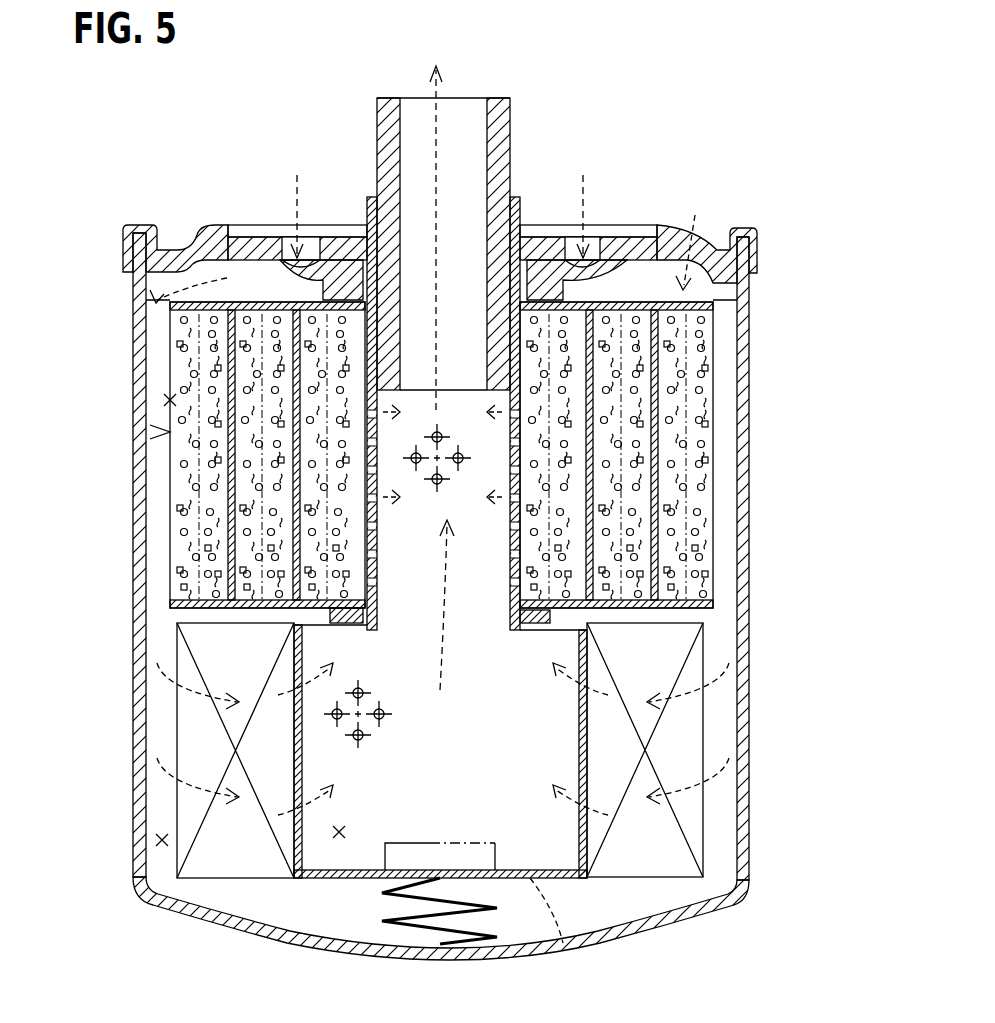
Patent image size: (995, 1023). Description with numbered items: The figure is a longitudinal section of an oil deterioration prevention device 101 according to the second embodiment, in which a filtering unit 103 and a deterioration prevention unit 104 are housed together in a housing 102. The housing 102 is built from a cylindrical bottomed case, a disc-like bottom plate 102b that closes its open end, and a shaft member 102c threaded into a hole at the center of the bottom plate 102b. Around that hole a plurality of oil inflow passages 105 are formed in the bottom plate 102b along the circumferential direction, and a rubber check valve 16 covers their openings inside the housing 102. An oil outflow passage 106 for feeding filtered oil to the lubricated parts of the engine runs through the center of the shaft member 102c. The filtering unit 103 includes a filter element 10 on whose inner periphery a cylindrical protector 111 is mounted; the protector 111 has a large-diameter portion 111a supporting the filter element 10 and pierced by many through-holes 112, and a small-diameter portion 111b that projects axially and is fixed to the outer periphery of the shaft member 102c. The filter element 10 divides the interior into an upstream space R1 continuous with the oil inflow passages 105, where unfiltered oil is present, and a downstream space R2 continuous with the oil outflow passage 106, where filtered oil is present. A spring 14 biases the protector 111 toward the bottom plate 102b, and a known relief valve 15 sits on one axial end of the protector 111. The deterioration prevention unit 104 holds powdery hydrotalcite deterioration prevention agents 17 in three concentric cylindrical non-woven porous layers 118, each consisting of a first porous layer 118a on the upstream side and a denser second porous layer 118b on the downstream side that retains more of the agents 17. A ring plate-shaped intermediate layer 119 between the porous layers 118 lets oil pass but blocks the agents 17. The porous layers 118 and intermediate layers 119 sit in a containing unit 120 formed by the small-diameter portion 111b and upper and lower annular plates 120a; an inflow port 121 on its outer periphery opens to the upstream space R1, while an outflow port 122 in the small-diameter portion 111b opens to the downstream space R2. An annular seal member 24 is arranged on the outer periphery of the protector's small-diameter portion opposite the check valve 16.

The filter element 10 is at (188, 810).
The spring 14 is at (525, 868).
The relief valve 15 is at (580, 958).
The check valve 16 is at (280, 271).
The deterioration prevention agents 17 is at (703, 353).
The annular seal member 24 is at (593, 625).
The oil deterioration prevention device 101 is at (676, 128).
The housing 102 is at (776, 230).
The bottom plate 102b is at (640, 245).
The shaft member 102c is at (512, 116).
The filtering unit 103 is at (155, 725).
The deterioration prevention unit 104 is at (168, 432).
The oil inflow passages 105 is at (590, 237).
The oil outflow passage 106 is at (412, 125).
The protector 111 is at (497, 745).
The large-diameter portion 111a is at (580, 717).
The small-diameter portion 111b is at (505, 680).
The through-holes 112 is at (577, 820).
The porous layers 118 is at (293, 578).
The first porous layer 118a is at (720, 458).
The second porous layer 118b is at (655, 525).
The intermediate layer 119 is at (625, 565).
The containing unit 120 is at (683, 262).
The annular plates 120a is at (228, 608).
The inflow port 121 is at (165, 398).
The outflow port 122 is at (510, 545).
The upstream space R1 is at (160, 840).
The downstream space R2 is at (339, 840).